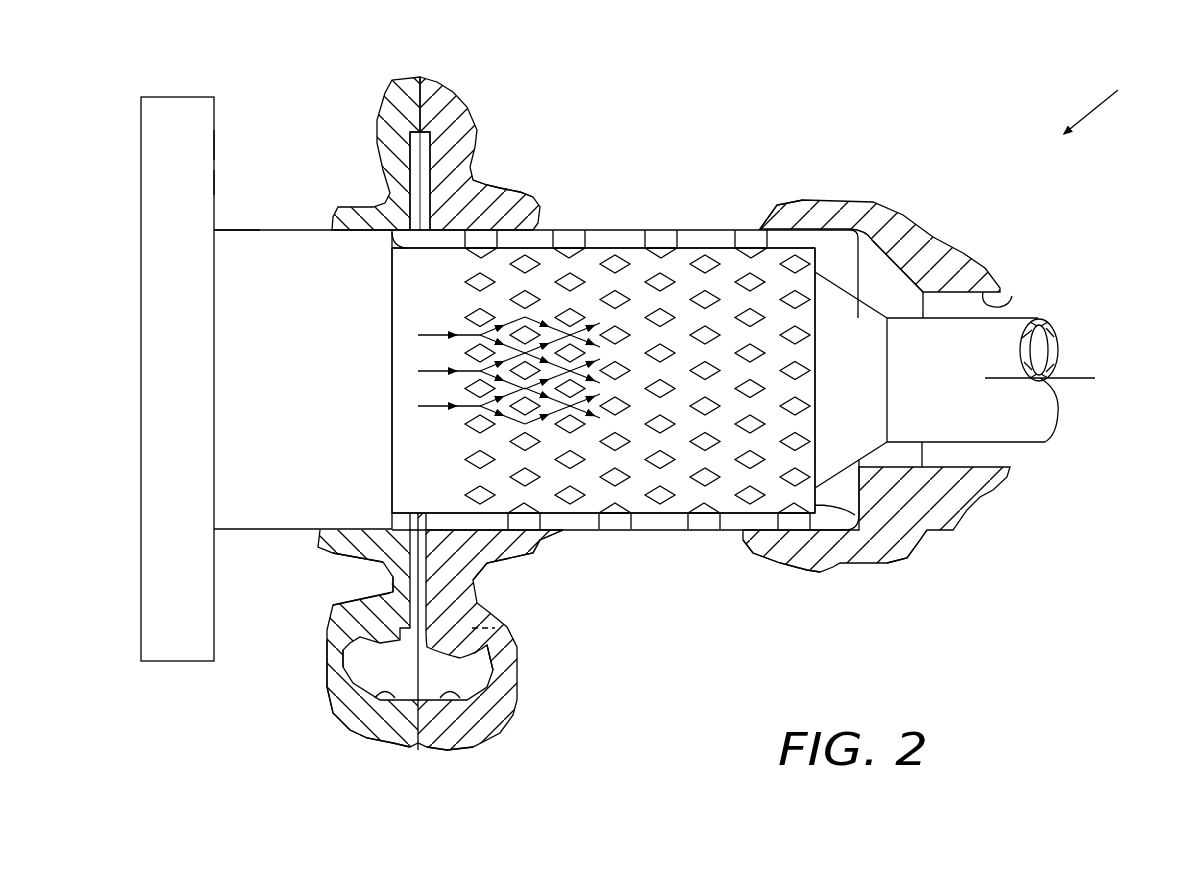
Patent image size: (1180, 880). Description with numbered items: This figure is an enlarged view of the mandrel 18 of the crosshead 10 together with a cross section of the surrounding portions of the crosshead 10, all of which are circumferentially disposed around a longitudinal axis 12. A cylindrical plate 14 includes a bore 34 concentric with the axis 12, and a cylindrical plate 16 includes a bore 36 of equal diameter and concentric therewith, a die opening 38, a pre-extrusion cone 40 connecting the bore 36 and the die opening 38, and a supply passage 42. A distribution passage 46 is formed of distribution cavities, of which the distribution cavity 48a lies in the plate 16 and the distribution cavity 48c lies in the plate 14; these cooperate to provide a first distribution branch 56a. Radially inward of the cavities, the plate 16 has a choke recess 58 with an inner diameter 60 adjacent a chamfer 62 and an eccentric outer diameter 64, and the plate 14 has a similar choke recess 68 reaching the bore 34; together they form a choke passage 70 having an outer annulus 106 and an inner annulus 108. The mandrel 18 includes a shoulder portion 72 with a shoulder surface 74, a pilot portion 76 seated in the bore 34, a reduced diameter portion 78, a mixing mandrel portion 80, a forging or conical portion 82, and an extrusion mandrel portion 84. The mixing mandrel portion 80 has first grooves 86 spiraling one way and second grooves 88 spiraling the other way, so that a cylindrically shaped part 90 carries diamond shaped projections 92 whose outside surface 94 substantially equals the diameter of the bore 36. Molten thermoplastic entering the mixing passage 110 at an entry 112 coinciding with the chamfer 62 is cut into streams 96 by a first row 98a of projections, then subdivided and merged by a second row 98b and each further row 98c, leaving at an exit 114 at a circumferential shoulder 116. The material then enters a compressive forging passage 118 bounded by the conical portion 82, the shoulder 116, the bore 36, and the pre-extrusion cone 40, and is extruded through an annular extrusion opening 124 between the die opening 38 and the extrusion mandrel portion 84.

The crosshead 10 is at (1111, 100).
The longitudinal axis 12 is at (1068, 382).
The plate 14 is at (437, 132).
The plate 16 is at (430, 77).
The mandrel 18 is at (214, 118).
The bore 34 is at (300, 527).
The bore 36 is at (637, 366).
The die opening 38 is at (1010, 303).
The pre-extrusion cone 40 is at (910, 234).
The supply passage 42 is at (408, 672).
The distribution passage 46 is at (340, 690).
The distribution cavity 48a is at (460, 705).
The distribution cavity 48c is at (365, 702).
The first distribution branch 56a is at (367, 675).
The choke recess 58 is at (470, 613).
The inner diameter 60 is at (478, 575).
The chamfer 62 is at (430, 193).
The outer diameter 64 is at (500, 642).
The choke recess 68 is at (395, 570).
The choke passage 70 is at (352, 607).
The shoulder portion 72 is at (214, 146).
The shoulder surface 74 is at (214, 182).
The pilot portion 76 is at (240, 228).
The reduced diameter portion 78 is at (430, 280).
The mixing mandrel portion 80 is at (728, 260).
The conical portion 82 is at (860, 388).
The extrusion mandrel portion 84 is at (942, 380).
The first grooves 86 is at (720, 497).
The second grooves 88 is at (670, 500).
The cylindrically shaped part 90 is at (625, 248).
The diamond shaped projections 92 is at (600, 232).
The outside surface 94 is at (745, 228).
The streams 96 is at (445, 400).
The first circumferentially disposed row 98a is at (473, 492).
The second circumferentially disposed row 98b is at (525, 473).
The circumferentially disposed row 98c is at (625, 478).
The outer annulus 106 is at (367, 655).
The inner annulus 108 is at (380, 560).
The mixing passage 110 is at (800, 238).
The entry 112 is at (452, 215).
The exit 114 is at (815, 518).
The circumferential shoulder 116 is at (900, 533).
The compressive forging passage 118 is at (840, 248).
The annular extrusion opening 124 is at (898, 538).